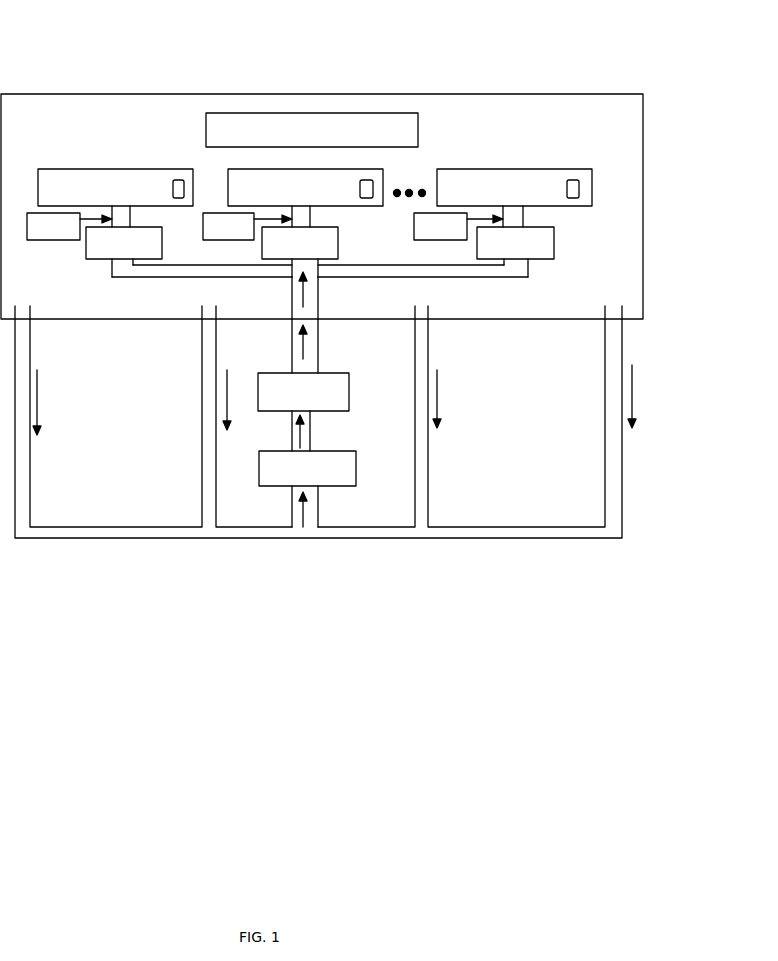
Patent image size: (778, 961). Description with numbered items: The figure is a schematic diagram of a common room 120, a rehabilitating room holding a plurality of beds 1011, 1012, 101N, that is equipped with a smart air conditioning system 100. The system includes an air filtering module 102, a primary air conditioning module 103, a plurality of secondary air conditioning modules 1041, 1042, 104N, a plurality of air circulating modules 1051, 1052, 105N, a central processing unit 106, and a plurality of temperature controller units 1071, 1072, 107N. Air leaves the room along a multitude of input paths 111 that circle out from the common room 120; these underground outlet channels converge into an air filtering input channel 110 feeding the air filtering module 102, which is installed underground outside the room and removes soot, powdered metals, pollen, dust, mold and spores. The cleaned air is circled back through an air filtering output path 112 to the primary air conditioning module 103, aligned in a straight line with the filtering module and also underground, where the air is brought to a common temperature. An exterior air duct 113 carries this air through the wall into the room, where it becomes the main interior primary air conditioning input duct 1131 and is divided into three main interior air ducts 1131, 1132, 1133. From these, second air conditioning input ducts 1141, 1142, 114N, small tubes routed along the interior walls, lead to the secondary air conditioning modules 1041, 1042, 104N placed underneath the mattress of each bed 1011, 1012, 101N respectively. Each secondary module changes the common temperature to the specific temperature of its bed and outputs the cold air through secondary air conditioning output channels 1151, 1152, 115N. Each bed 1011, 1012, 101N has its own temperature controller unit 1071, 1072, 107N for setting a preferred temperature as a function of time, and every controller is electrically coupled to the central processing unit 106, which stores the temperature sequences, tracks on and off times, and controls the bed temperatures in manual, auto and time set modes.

The smart air conditioning system 100 is at (329, 65).
The common room 120 is at (41, 94).
The central processing unit 106 is at (312, 130).
The bed 1011 is at (115, 187).
The bed 1012 is at (305, 187).
The bed 101N is at (514, 187).
The temperature controller unit 1071 is at (184, 189).
The temperature controller unit 1072 is at (373, 189).
The temperature controller unit 107N is at (579, 189).
The air circulating module 1051 is at (69, 226).
The air circulating module 1052 is at (247, 226).
The air circulating module 105N is at (458, 226).
The secondary air conditioning output channel 1151 is at (130, 216).
The secondary air conditioning output channel 1152 is at (310, 215).
The secondary air conditioning output channel 115N is at (523, 213).
The secondary air conditioning module 1041 is at (124, 243).
The secondary air conditioning module 1042 is at (300, 243).
The secondary air conditioning module 104N is at (515, 243).
The second air conditioning input duct 1141 is at (108, 262).
The second air conditioning input duct 1142 is at (322, 264).
The second air conditioning input duct 114N is at (528, 263).
The main interior primary air conditioning input duct 1131 is at (320, 295).
The main interior air duct 1132 is at (180, 277).
The main interior air duct 1133 is at (452, 277).
The exterior air duct 113 is at (317, 350).
The air filtering output path 112 is at (310, 433).
The primary air conditioning module 103 is at (303, 392).
The air filtering module 102 is at (307, 489).
The air filtering input channel 110 is at (117, 538).
The input path 111 is at (32, 495).